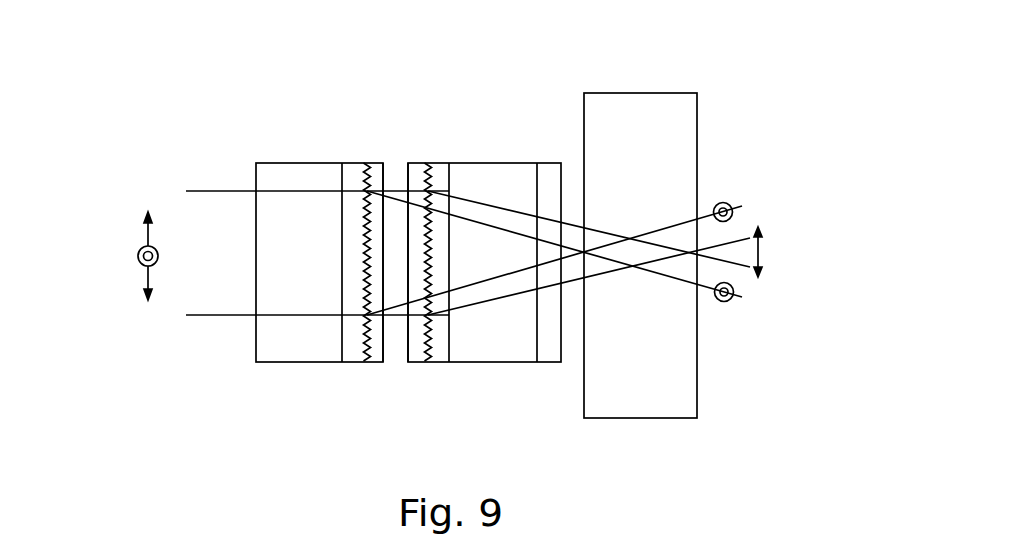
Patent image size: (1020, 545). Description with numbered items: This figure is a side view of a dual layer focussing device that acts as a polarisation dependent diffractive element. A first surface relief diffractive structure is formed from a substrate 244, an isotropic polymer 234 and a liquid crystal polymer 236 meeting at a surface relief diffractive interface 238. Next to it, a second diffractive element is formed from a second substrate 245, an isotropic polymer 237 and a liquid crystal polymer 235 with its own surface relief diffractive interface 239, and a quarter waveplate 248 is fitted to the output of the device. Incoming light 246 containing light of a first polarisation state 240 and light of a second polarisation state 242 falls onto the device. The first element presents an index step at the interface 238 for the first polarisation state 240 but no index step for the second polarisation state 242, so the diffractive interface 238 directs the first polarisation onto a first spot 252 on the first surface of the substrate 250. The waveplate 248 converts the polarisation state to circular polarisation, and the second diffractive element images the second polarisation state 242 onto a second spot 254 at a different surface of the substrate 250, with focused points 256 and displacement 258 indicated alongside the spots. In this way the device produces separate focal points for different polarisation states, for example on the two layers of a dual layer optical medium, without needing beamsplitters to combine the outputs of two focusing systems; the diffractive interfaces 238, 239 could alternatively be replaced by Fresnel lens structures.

The isotropic polymer 234 is at (353, 163).
The liquid crystal polymer 235 is at (420, 163).
The liquid crystal polymer 236 is at (380, 163).
The isotropic polymer 237 is at (443, 163).
The surface relief diffractive interface 238 is at (367, 363).
The surface relief diffractive interface 239 is at (428, 363).
The first polarisation state 240 is at (138, 256).
The second polarisation state 242 is at (143, 214).
The substrate 244 is at (283, 163).
The second substrate 245 is at (520, 163).
The input light beam 246 is at (212, 320).
The quarter waveplate 248 is at (550, 363).
The substrate 250 is at (638, 420).
The first spot 252 is at (606, 242).
The second spot 254 is at (697, 268).
The first focus spot 256 is at (723, 202).
The focus spot displacement direction 258 is at (762, 250).